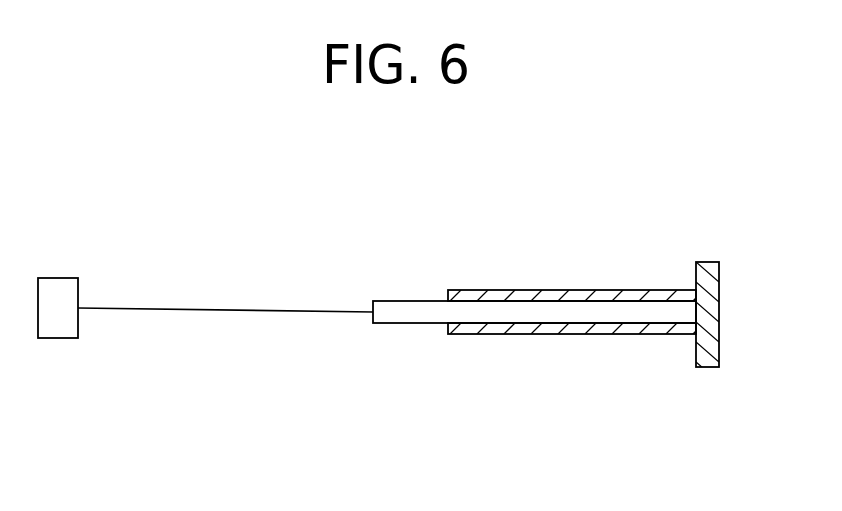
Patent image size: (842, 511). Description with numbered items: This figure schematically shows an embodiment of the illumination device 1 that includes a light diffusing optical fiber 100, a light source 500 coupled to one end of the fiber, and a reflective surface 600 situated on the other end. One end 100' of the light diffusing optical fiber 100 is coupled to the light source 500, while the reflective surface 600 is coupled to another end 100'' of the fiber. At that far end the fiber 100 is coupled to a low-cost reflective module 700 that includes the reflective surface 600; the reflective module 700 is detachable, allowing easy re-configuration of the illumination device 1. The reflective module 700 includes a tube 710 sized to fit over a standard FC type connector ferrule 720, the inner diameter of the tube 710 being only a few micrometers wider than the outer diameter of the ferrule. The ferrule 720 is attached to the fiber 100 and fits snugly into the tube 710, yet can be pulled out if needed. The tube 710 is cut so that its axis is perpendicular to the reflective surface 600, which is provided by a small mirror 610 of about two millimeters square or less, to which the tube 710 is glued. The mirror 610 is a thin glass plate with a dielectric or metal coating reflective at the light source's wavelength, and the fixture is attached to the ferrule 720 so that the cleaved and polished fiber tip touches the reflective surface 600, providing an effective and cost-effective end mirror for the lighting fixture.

The illumination device 1 is at (198, 158).
The light source 500 is at (52, 289).
The light diffusing optical fiber 100 is at (225, 332).
The one end of the light diffusing optical fiber 100' is at (119, 268).
The connector ferrule 720 is at (413, 279).
The reflective module 700 is at (720, 193).
The tube 710 is at (562, 292).
The another end of the light diffusing optical fiber 100'' is at (610, 359).
The reflective surface 600 is at (695, 352).
The mirror 610 is at (709, 382).